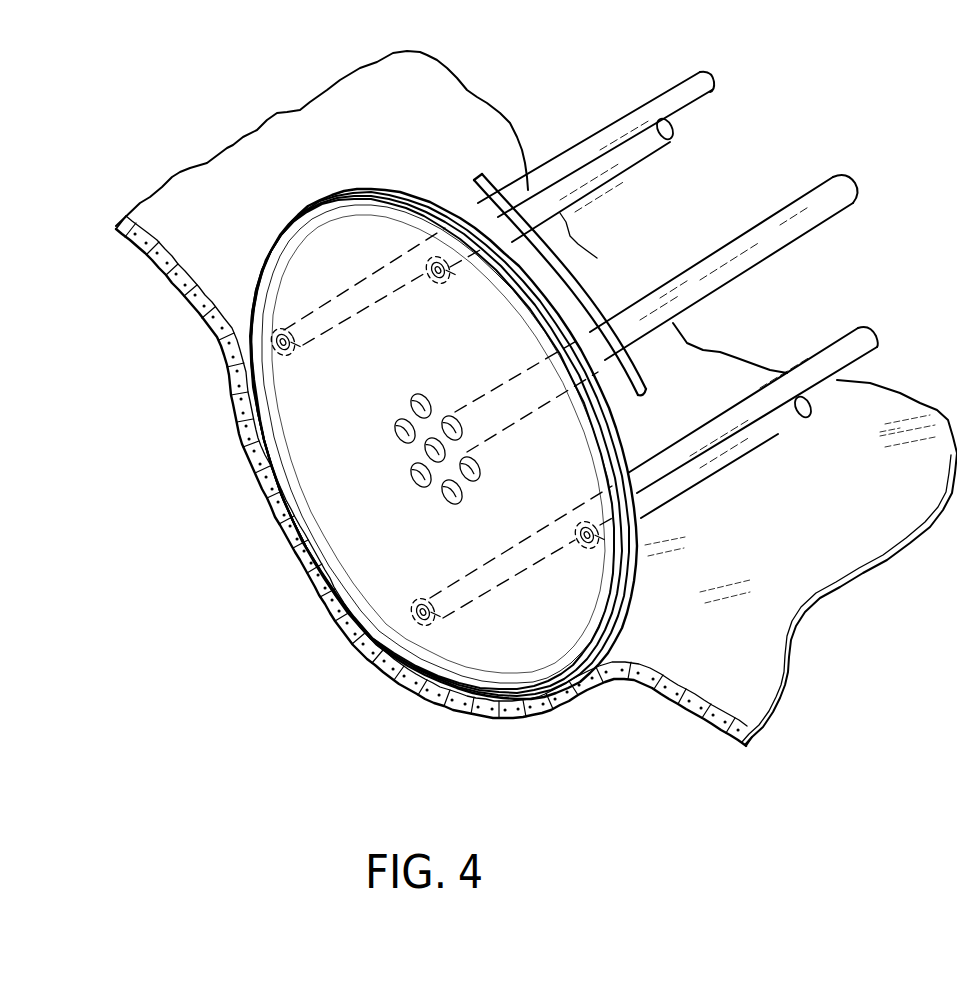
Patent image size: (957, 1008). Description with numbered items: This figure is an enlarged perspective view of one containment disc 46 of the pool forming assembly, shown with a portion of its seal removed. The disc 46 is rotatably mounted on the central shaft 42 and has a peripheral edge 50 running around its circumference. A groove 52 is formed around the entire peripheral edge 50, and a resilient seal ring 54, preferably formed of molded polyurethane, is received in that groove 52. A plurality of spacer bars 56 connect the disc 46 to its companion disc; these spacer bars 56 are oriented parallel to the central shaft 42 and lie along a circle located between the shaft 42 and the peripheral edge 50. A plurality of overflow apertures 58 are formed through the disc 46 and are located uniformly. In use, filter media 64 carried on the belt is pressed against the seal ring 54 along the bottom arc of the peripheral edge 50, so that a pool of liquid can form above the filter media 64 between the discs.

The central shaft 42 is at (743, 253).
The containment disc 46 is at (397, 444).
The peripheral edge 50 is at (612, 660).
The groove 52 is at (500, 277).
The seal ring 54 is at (597, 257).
The spacer bars 56 is at (613, 157).
The overflow apertures 58 is at (420, 500).
The filter media 64 is at (747, 667).